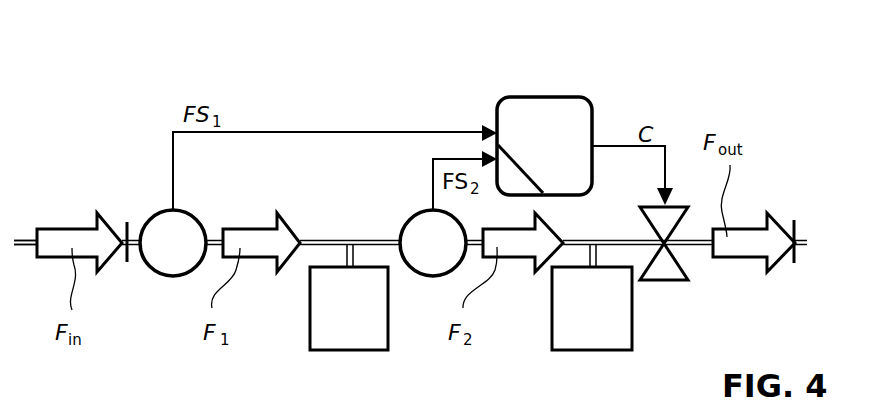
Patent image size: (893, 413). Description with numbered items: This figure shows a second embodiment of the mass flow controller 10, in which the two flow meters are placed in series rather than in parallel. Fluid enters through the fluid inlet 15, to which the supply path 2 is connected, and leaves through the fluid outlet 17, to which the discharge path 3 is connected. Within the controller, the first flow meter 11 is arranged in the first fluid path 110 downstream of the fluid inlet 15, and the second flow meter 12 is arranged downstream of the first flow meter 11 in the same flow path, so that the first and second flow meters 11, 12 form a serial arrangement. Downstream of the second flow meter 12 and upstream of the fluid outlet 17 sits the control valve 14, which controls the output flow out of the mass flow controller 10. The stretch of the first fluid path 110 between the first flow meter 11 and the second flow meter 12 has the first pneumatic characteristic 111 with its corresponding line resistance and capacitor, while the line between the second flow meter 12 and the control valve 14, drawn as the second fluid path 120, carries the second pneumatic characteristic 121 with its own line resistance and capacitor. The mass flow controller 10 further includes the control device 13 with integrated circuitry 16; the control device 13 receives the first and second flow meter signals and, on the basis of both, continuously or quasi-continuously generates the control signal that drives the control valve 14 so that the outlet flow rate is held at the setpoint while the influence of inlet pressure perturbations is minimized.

The supply path 2 is at (27, 245).
The discharge path 3 is at (803, 250).
The mass flow controller 10 is at (112, 89).
The first flow meter 11 is at (186, 254).
The second flow meter 12 is at (446, 254).
The control device 13 is at (562, 152).
The control valve 14 is at (663, 272).
The fluid inlet 15 is at (127, 262).
The integrated circuitry 16 is at (510, 167).
The fluid outlet 17 is at (793, 220).
The first fluid path 110 is at (312, 247).
The first pneumatic characteristic 111 is at (366, 320).
The second fluid path 120 is at (575, 250).
The second pneumatic characteristic 121 is at (609, 320).